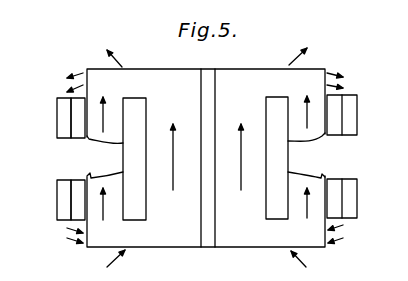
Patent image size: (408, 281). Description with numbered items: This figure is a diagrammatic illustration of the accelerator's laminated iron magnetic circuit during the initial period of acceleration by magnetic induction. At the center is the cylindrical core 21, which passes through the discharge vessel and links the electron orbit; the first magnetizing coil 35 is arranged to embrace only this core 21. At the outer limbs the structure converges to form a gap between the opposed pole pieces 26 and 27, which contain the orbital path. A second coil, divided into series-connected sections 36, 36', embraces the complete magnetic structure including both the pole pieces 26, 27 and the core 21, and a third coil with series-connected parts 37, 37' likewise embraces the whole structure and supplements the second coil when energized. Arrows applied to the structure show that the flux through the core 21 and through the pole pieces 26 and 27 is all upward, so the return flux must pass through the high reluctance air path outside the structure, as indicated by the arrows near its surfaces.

The cylindrical core 21 is at (240, 217).
The first magnetizing coil 35 is at (266, 100).
The pole piece 26 is at (325, 141).
The pole piece 27 is at (308, 173).
The second coil section 36 is at (57, 117).
The third coil part 37 is at (50, 118).
The second coil section 36' is at (76, 186).
The third coil part 37' is at (49, 200).